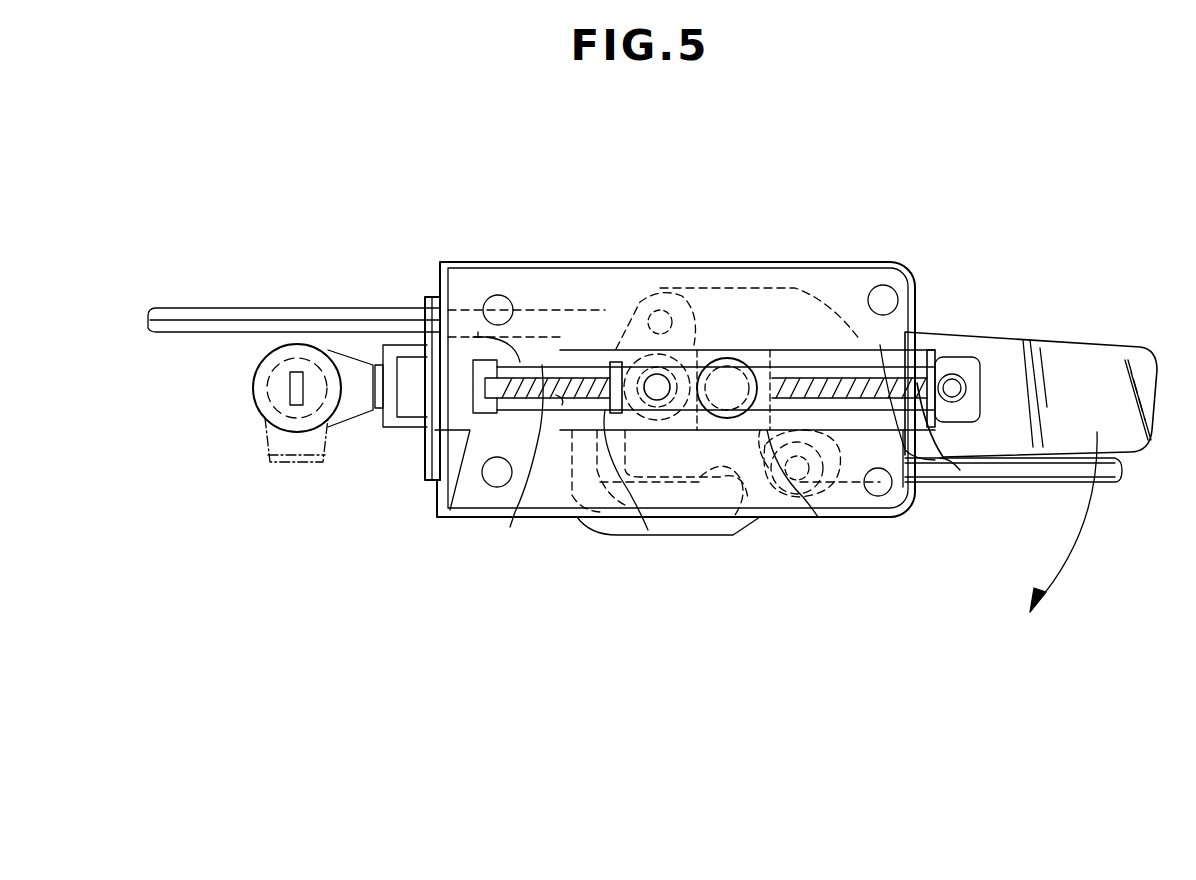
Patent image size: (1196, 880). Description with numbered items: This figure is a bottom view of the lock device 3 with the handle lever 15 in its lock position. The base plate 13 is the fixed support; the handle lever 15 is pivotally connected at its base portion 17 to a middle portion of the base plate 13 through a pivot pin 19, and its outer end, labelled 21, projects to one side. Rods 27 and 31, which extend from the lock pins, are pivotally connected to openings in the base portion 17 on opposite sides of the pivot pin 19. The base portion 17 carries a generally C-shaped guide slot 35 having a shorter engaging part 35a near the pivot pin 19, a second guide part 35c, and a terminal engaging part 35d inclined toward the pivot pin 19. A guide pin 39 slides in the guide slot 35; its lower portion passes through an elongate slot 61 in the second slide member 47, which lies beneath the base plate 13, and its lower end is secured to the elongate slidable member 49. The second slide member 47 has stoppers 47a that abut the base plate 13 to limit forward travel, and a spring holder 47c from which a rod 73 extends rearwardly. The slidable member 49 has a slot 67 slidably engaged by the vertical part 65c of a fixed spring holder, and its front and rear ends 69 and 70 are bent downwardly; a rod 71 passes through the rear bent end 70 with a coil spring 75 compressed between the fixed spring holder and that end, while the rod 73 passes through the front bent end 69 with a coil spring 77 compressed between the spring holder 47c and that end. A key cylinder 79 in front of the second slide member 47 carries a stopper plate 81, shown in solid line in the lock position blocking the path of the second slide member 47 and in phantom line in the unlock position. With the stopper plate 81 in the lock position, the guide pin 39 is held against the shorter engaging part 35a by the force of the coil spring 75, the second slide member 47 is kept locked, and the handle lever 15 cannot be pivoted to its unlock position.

The lock device 3 is at (968, 264).
The base plate 13 is at (855, 280).
The handle lever 15 is at (1033, 334).
The base portion 17 is at (617, 535).
The pivot pin 19 is at (712, 416).
The grip portion 21 is at (1118, 348).
The rod 27 is at (238, 308).
The rod 31 is at (1038, 478).
The C-shaped guide slot 35 is at (578, 515).
The shorter engaging part 35a is at (660, 300).
The second guide part 35c is at (705, 517).
The terminal engaging part 35d is at (760, 500).
The guide pin 39 is at (660, 385).
The second slide member 47 is at (452, 300).
The stopper 47a is at (478, 337).
The spring holder 47c is at (428, 456).
The slidable member 49 is at (760, 352).
The elongate slot 61 is at (529, 460).
The vertical part 65c is at (818, 517).
The slot 67 is at (922, 485).
The front bent end 69 is at (648, 530).
The rear bent end 70 is at (940, 350).
The rod 71 is at (900, 347).
The rod 73 is at (522, 360).
The coil spring 75 is at (967, 477).
The coil spring 77 is at (545, 360).
The key cylinder 79 is at (255, 399).
The stopper plate 81 is at (272, 455).